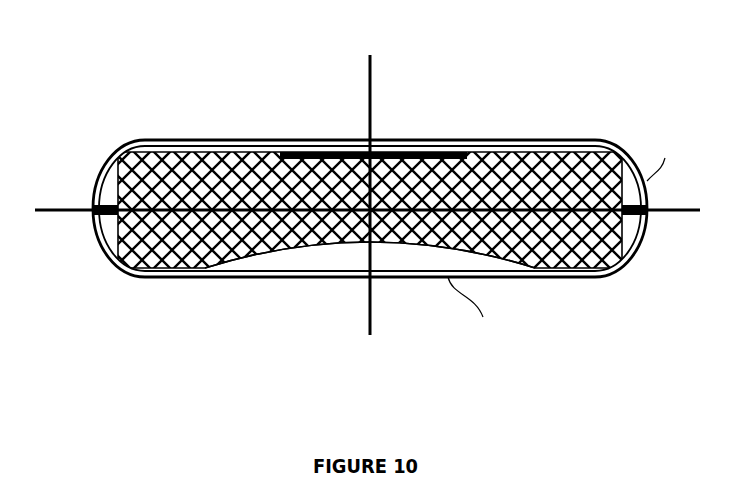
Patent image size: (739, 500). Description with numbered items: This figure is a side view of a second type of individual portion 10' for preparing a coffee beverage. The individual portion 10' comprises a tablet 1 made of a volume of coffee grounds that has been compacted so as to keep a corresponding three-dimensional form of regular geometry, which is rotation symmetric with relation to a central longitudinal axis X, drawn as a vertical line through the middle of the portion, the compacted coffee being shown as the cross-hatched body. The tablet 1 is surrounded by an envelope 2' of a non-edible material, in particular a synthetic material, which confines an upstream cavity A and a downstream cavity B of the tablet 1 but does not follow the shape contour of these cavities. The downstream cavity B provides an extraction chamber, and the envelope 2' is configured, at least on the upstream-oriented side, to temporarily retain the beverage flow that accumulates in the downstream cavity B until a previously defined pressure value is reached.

The individual portion 10' is at (368, 176).
The tablet 1 is at (216, 150).
The envelope 2' is at (379, 193).
The upstream cavity A is at (345, 155).
The downstream cavity B is at (302, 259).
The central longitudinal axis X is at (367, 196).